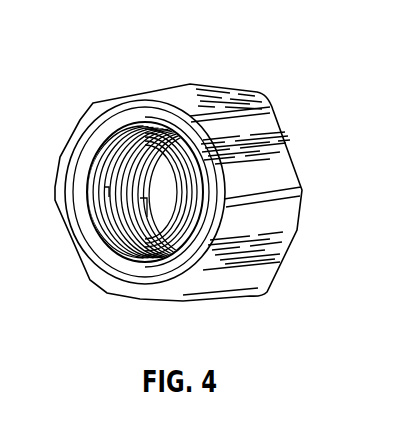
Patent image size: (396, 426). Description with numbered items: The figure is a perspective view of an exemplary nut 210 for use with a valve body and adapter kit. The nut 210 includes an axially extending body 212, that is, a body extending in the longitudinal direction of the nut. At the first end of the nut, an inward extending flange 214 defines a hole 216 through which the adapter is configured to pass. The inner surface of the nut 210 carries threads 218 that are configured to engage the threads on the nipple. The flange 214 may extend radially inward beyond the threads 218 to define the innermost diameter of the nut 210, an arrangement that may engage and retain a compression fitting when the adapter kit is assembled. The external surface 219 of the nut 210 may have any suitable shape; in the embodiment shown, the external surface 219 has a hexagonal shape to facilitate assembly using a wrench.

The nut 210 is at (121, 50).
The axially extending body 212 is at (278, 118).
The inward extending flange 214 is at (182, 125).
The hole 216 is at (190, 200).
The threads 218 is at (108, 201).
The external surface 219 is at (270, 170).